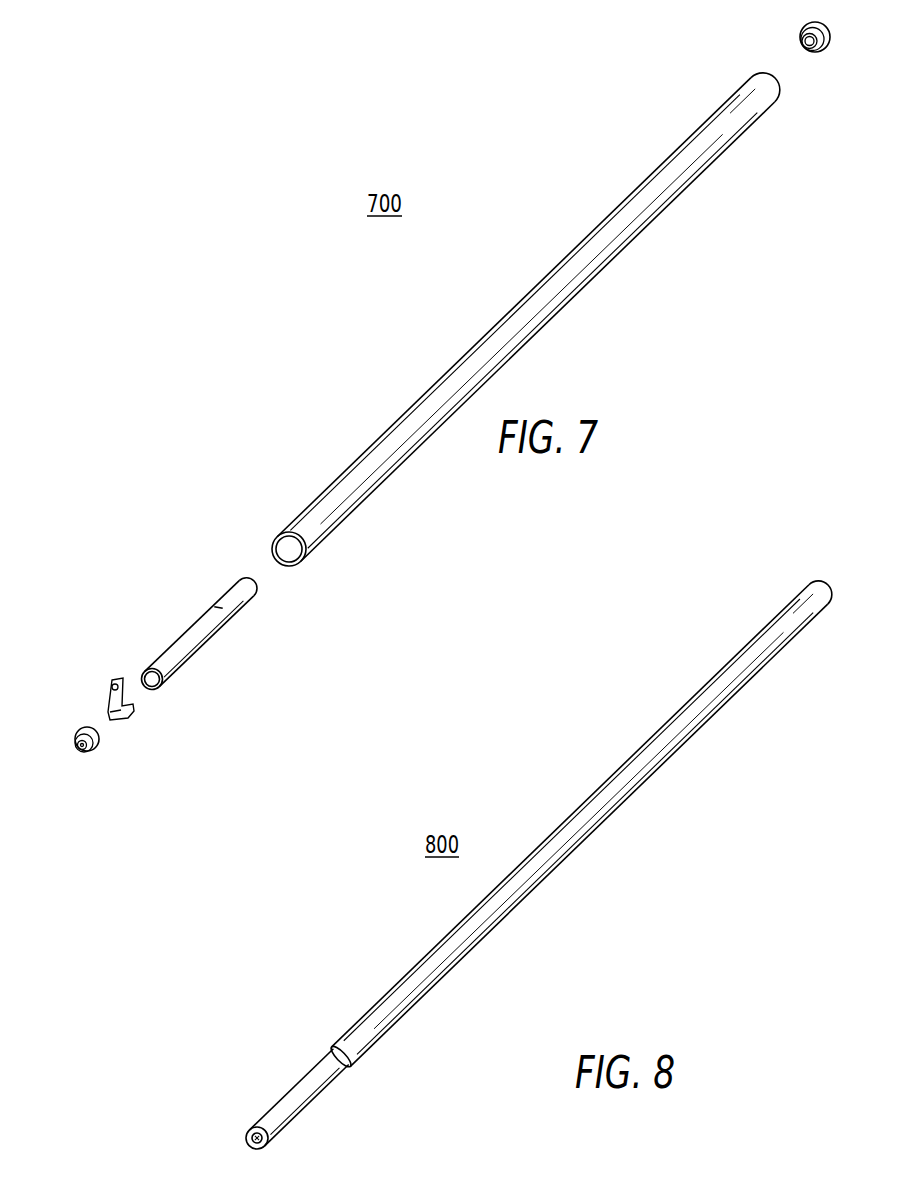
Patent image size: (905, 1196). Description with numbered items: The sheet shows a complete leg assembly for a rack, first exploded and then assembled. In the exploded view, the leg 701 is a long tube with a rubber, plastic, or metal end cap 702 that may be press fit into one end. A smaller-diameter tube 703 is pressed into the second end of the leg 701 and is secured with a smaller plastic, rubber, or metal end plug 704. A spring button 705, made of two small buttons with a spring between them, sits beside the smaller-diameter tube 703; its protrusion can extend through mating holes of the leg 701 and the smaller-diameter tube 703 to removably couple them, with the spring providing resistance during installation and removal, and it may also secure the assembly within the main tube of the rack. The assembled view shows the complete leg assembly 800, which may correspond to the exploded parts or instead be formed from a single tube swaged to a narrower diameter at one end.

In FIG. 7, the leg 701 is at (423, 393).
In FIG. 7, the end cap 702 is at (796, 37).
In FIG. 7, the smaller-diameter tube 703 is at (231, 580).
In FIG. 7, the end plug 704 is at (84, 726).
In FIG. 7, the spring button 705 is at (124, 676).
In FIG. 8, the complete leg assembly 800 is at (539, 865).